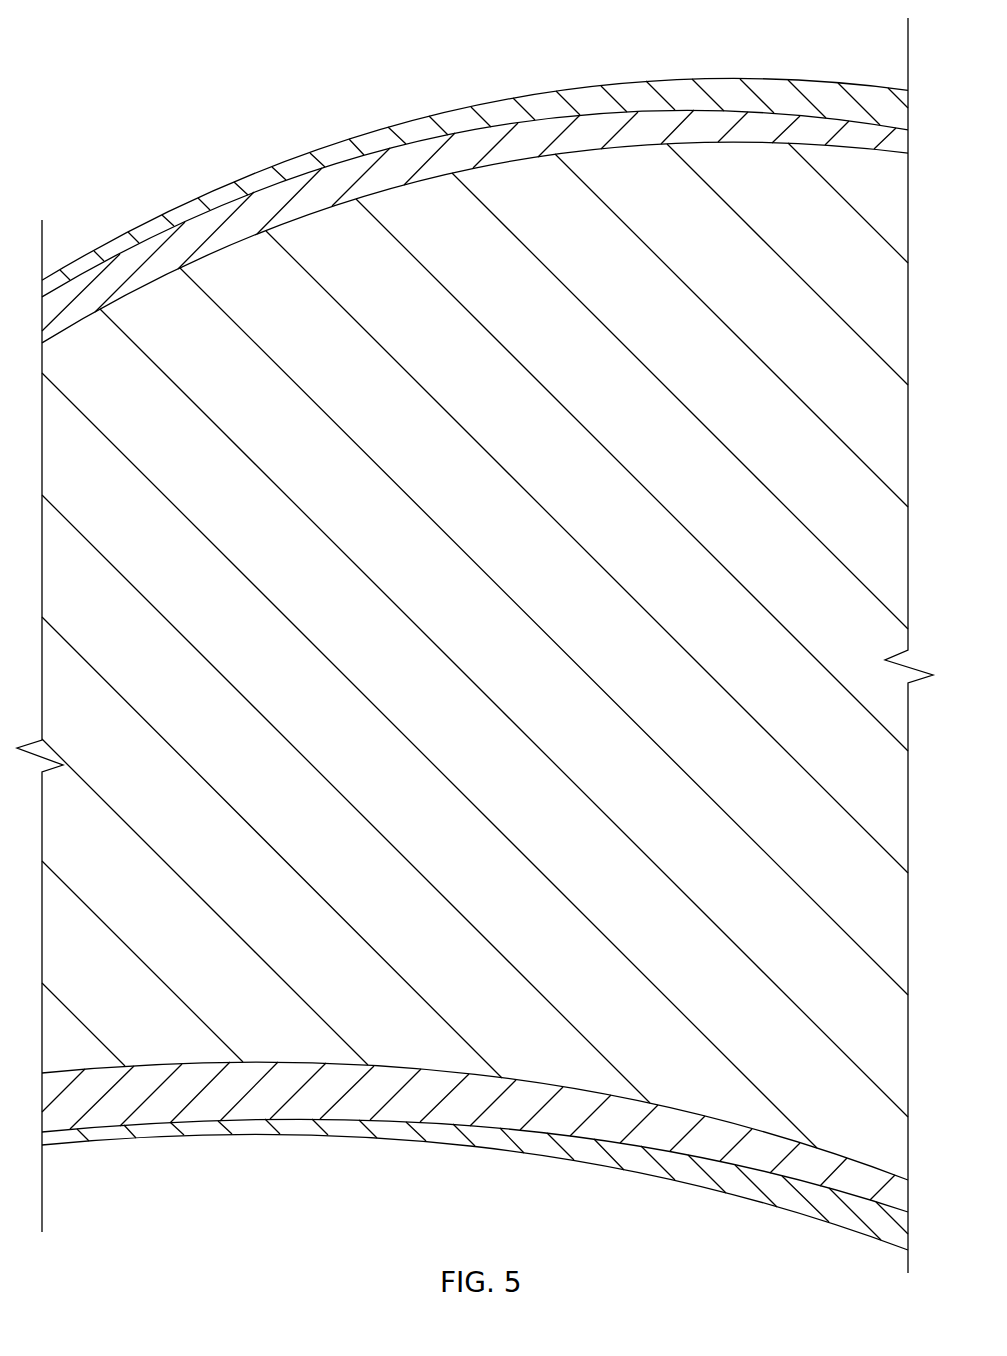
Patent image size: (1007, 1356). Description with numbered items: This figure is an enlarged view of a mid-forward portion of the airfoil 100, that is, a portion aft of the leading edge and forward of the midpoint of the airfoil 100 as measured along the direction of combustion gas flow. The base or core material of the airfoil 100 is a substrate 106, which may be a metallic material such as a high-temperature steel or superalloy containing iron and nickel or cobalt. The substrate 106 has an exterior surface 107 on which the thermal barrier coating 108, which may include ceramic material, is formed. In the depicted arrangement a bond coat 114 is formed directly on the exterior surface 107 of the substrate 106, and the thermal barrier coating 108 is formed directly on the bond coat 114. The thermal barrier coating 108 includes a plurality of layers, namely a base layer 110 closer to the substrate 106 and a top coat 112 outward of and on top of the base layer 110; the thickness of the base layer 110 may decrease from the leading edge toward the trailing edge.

The airfoil 100 is at (147, 77).
The substrate 106 is at (482, 746).
The exterior surface 107 is at (385, 185).
The thermal barrier coating 108 is at (117, 222).
The base layer 110 is at (260, 210).
The top coat 112 is at (623, 100).
The bond coat 114 is at (462, 170).